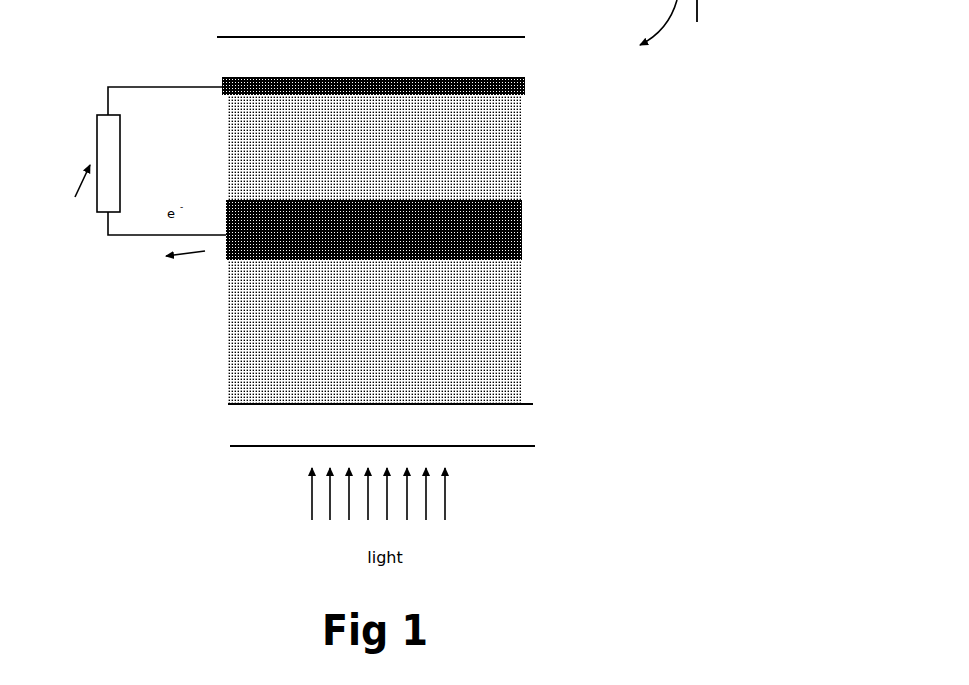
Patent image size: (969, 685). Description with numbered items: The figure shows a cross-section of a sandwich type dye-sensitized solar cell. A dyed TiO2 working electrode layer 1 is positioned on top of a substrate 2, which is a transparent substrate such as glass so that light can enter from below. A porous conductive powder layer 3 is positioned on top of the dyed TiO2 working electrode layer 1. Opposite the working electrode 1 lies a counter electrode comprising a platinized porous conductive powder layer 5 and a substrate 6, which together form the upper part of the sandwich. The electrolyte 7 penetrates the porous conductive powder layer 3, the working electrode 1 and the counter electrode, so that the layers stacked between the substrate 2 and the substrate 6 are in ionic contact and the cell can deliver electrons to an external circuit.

The dyed TiO2 working electrode layer 1 is at (487, 317).
The substrate 2 is at (514, 424).
The porous conductive powder layer 3 is at (534, 209).
The platinized porous conductive powder layer 5 is at (532, 82).
The substrate 6 is at (514, 56).
The electrolyte 7 is at (457, 157).